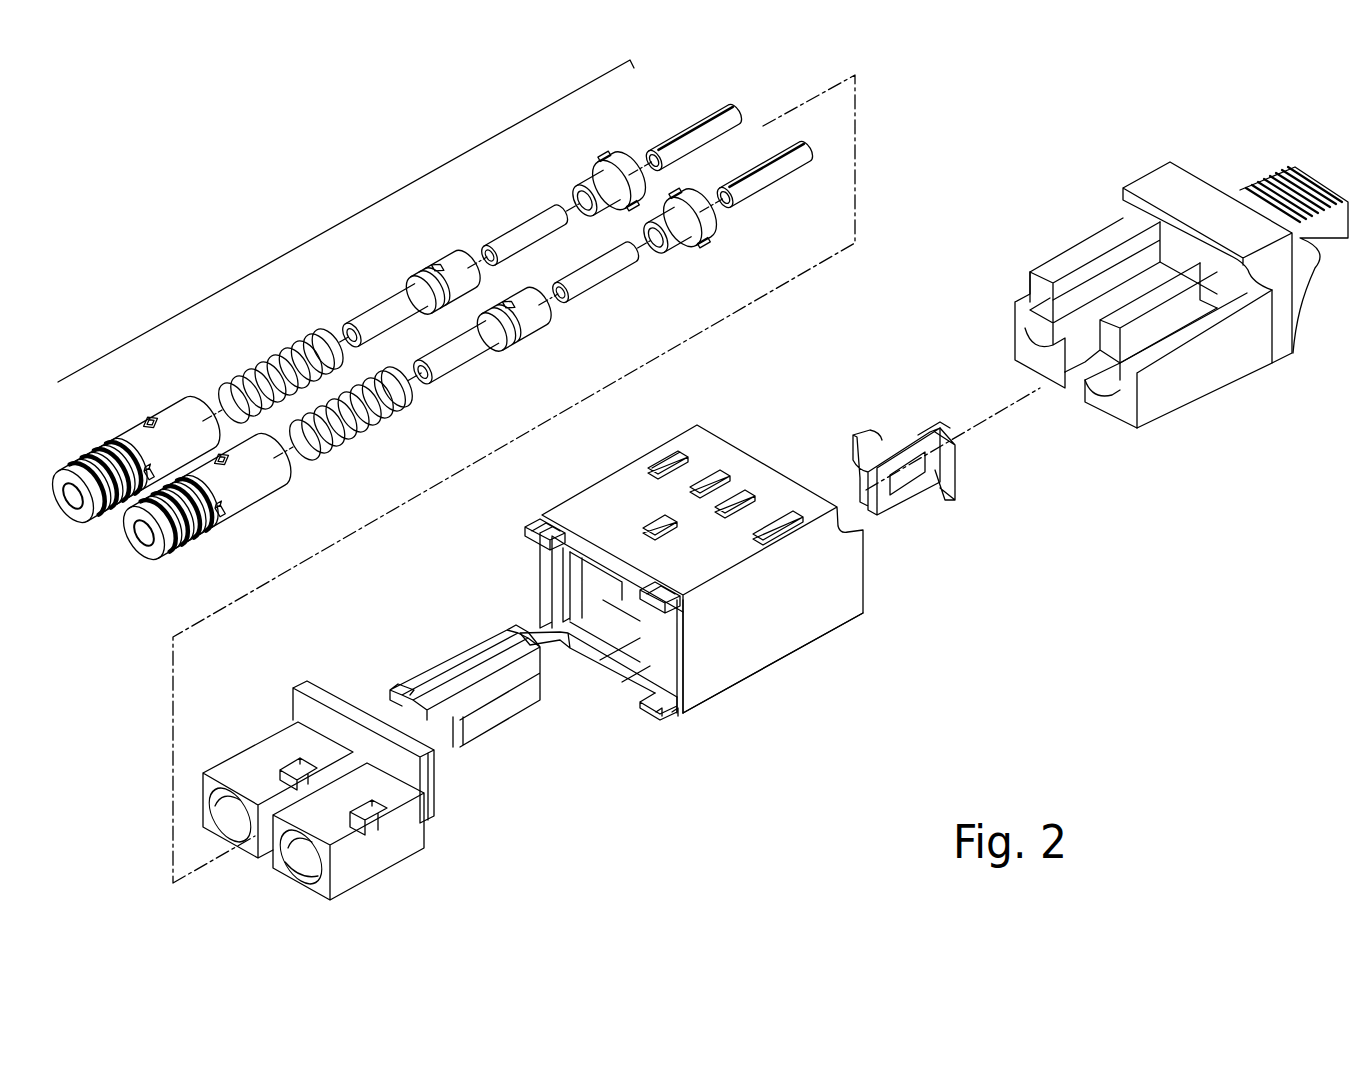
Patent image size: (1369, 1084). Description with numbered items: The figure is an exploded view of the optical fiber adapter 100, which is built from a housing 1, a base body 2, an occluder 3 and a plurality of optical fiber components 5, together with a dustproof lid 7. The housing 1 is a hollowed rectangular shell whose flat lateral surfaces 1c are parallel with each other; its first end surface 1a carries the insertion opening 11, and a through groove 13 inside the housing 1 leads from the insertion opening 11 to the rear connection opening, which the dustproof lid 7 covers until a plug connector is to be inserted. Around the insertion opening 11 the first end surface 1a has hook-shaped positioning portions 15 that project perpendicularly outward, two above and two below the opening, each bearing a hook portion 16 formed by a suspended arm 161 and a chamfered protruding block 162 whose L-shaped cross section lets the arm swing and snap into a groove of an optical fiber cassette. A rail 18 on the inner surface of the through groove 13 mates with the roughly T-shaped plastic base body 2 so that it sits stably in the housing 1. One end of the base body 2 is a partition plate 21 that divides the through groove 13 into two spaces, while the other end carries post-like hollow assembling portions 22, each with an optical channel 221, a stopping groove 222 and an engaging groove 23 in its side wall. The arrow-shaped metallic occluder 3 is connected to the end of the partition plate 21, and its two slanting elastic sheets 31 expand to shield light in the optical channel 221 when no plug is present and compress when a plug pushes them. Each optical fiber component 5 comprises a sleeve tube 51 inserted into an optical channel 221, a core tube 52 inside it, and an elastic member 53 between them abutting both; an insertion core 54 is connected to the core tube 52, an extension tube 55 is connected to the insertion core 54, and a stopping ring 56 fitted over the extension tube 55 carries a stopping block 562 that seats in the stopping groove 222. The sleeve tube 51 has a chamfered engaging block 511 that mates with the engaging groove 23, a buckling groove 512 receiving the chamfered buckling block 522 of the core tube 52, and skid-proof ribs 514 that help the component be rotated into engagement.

The optical fiber adapter 100 is at (1094, 697).
The housing 1 is at (818, 640).
The first end surface 1a is at (597, 553).
The lateral surfaces 1c is at (740, 640).
The insertion opening 11 is at (555, 575).
The through groove 13 is at (600, 582).
The positioning portions 15 is at (527, 528).
The hook portion 16 is at (755, 765).
The suspended arm 161 is at (674, 714).
The protruding block 162 is at (660, 715).
The rail 18 is at (600, 642).
The base body 2 is at (435, 800).
The partition plate 21 is at (457, 663).
The assembling portions 22 is at (360, 868).
The optical channel 221 is at (300, 852).
The stopping groove 222 is at (310, 727).
The engaging groove 23 is at (387, 830).
The occluder 3 is at (907, 440).
The elastic sheet 31 is at (943, 473).
The optical fiber components 5 is at (374, 212).
The sleeve tube 51 is at (118, 432).
The engaging block 511 is at (263, 493).
The buckling groove 512 is at (147, 418).
The ribs 514 is at (180, 550).
The core tube 52 is at (383, 303).
The buckling block 522 is at (433, 262).
The elastic member 53 is at (267, 362).
The insertion core 54 is at (520, 228).
The extension tube 55 is at (670, 140).
The stopping ring 56 is at (683, 238).
The stopping block 562 is at (612, 162).
The dustproof lid 7 is at (1157, 183).